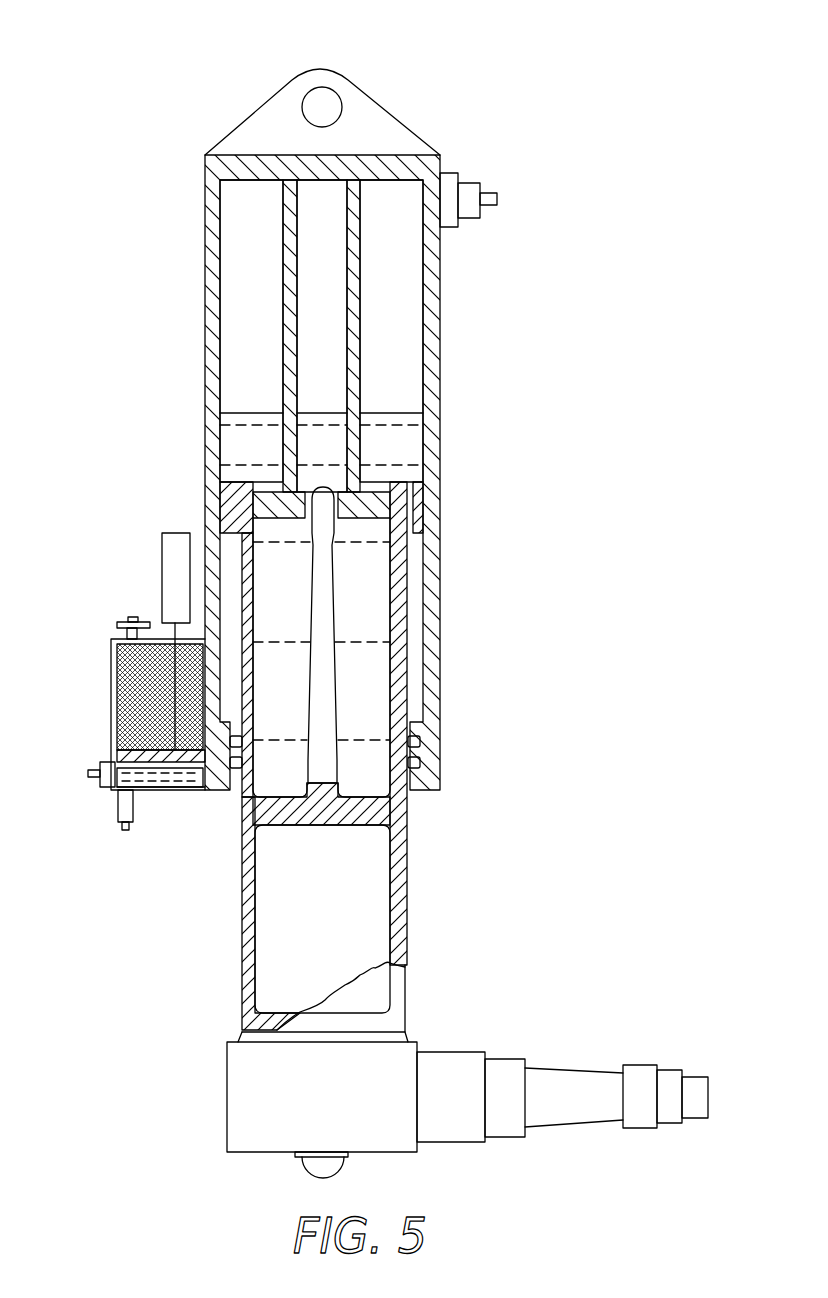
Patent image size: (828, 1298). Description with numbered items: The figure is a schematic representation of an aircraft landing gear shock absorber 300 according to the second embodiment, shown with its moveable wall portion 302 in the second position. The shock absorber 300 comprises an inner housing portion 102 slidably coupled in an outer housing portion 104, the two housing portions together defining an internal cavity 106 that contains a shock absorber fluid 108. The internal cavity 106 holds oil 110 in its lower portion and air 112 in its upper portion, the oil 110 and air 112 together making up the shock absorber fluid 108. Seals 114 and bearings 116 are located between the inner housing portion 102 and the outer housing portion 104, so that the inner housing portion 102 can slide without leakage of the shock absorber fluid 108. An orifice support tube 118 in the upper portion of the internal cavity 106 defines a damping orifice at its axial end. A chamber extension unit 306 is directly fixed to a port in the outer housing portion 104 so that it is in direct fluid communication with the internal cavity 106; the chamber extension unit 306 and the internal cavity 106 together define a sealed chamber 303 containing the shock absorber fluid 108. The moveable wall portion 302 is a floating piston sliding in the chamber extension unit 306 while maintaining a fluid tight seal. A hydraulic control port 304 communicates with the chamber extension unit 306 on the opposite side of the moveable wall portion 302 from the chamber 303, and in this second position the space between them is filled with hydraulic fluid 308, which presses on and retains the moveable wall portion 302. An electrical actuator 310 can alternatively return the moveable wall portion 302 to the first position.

The shock absorber 300 is at (236, 60).
The inner housing portion 102 is at (405, 870).
The outer housing portion 104 is at (205, 395).
The internal cavity 106 is at (370, 572).
The shock absorber fluid 108 is at (407, 413).
The oil 110 is at (372, 668).
The air 112 is at (402, 258).
The seals 114 is at (410, 740).
The bearings 116 is at (222, 508).
The orifice support tube 118 is at (283, 258).
The chamber 303 is at (330, 298).
The moveable wall portion 302 is at (173, 792).
The hydraulic control port 304 is at (122, 622).
The chamber extension unit 306 is at (112, 678).
The hydraulic fluid 308 is at (137, 677).
The electrical actuator 310 is at (165, 548).